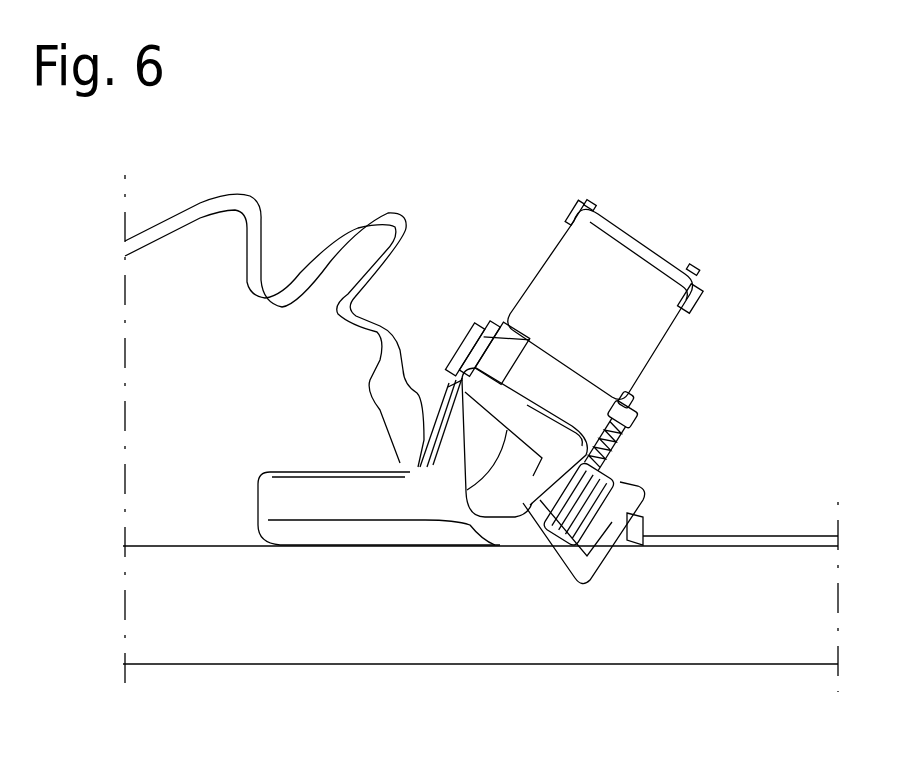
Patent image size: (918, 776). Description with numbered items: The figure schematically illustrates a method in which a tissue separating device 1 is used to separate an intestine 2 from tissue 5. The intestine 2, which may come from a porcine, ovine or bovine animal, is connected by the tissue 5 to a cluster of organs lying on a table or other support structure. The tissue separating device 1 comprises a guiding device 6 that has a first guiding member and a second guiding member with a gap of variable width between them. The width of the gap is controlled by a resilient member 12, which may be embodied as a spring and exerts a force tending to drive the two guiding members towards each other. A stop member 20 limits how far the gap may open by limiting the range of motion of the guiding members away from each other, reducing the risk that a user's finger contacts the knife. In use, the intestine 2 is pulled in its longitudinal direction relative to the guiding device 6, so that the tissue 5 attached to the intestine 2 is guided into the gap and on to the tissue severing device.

The tissue separating device 1 is at (687, 203).
The intestine 2 is at (380, 645).
The tissue 5 is at (355, 247).
The guiding device 6 is at (418, 508).
The resilient member 12 is at (600, 483).
The stop member 20 is at (505, 483).